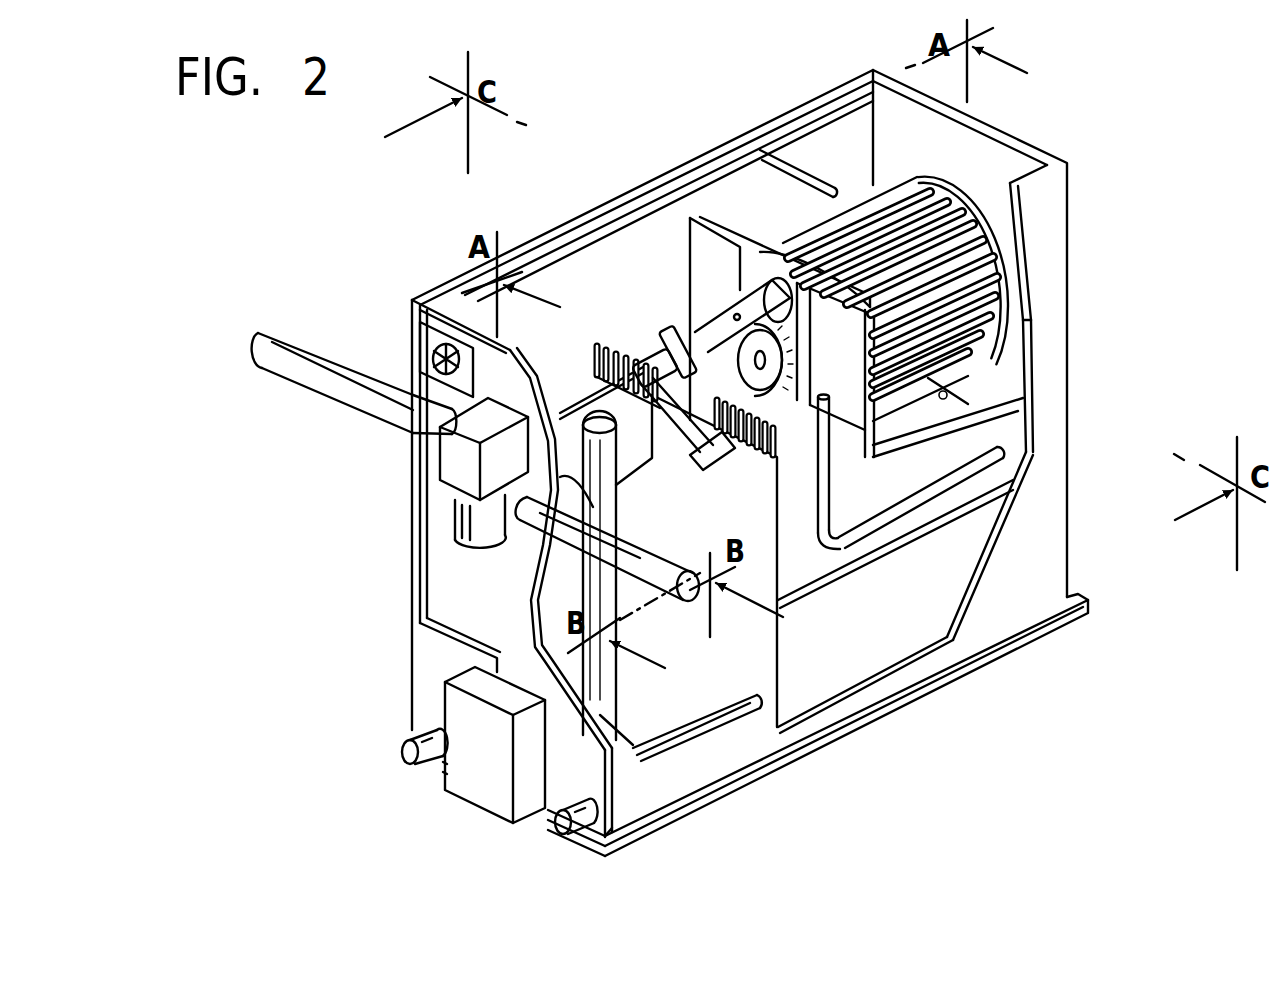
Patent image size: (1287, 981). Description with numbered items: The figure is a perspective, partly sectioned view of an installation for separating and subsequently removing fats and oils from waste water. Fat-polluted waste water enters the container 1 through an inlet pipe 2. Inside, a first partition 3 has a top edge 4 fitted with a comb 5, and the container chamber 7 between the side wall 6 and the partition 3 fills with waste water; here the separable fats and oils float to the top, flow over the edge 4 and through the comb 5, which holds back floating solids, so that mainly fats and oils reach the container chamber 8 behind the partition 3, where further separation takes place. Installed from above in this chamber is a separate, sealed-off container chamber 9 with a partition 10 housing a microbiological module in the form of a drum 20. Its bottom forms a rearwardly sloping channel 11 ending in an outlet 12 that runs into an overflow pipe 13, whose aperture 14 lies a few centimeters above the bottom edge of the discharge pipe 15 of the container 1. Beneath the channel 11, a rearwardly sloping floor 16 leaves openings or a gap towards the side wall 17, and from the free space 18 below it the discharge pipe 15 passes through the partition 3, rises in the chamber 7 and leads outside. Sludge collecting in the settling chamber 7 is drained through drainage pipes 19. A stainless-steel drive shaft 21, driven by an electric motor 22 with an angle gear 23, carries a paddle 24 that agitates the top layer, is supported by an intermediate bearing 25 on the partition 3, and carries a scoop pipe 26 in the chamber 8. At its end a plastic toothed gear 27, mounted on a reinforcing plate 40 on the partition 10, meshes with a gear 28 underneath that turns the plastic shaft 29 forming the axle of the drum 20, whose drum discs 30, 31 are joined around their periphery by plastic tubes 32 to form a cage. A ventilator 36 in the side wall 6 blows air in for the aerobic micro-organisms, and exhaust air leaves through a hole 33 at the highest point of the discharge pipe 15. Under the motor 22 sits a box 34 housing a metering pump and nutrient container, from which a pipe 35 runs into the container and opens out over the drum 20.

The container 1 is at (1050, 318).
The inlet pipe 2 is at (300, 338).
The first partition 3 is at (758, 660).
The top edge 4 is at (690, 410).
The comb 5 is at (592, 360).
The side wall 6 is at (470, 580).
The container chamber 7 is at (470, 300).
The container chamber 8 is at (935, 528).
The container chamber 9 is at (856, 150).
The partition 10 is at (700, 250).
The channel 11 is at (1015, 382).
The outlet 12 is at (1000, 385).
The overflow pipe 13 is at (876, 525).
The aperture 14 is at (824, 395).
The discharge pipe 15 is at (590, 592).
The sloping floor 16 is at (957, 590).
The side wall 17 is at (1030, 163).
The space 18 is at (858, 652).
The drainage pipes 19 is at (403, 750).
The drum 20 is at (874, 130).
The drive shaft 21 is at (549, 388).
The electric motor 22 is at (470, 530).
The angle gear 23 is at (456, 453).
The paddle 24 is at (710, 465).
The intermediate bearing 25 is at (662, 340).
The scoop pipe 26 is at (715, 320).
The toothed gear 27 is at (770, 282).
The gear 28 is at (752, 445).
The shaft 29 is at (862, 318).
The drum disc 30 is at (792, 255).
The drum disc 31 is at (957, 183).
The plastic tubes 32 is at (1012, 278).
The hole 33 is at (607, 428).
The box 34 is at (478, 787).
The pipe 35 is at (823, 165).
The ventilator 36 is at (430, 355).
The reinforcing plate 40 is at (772, 388).